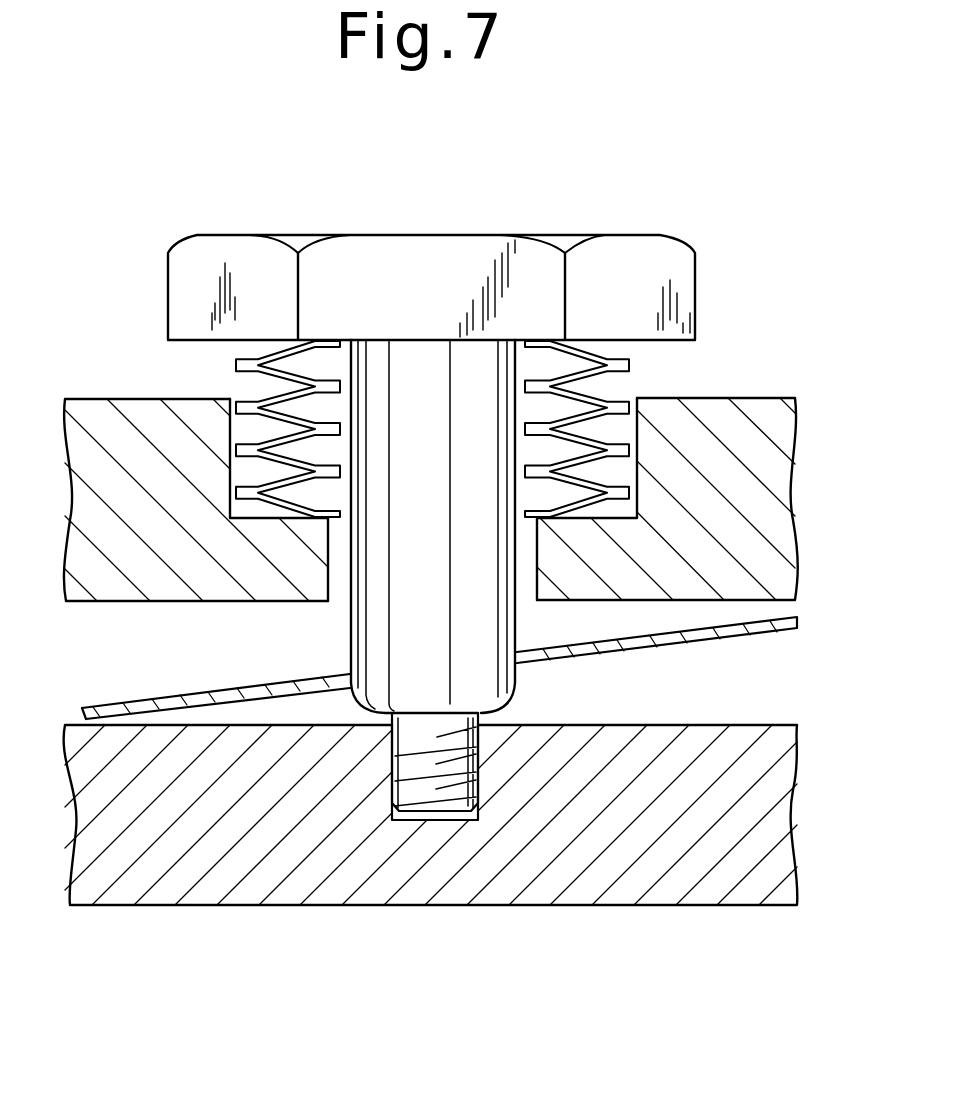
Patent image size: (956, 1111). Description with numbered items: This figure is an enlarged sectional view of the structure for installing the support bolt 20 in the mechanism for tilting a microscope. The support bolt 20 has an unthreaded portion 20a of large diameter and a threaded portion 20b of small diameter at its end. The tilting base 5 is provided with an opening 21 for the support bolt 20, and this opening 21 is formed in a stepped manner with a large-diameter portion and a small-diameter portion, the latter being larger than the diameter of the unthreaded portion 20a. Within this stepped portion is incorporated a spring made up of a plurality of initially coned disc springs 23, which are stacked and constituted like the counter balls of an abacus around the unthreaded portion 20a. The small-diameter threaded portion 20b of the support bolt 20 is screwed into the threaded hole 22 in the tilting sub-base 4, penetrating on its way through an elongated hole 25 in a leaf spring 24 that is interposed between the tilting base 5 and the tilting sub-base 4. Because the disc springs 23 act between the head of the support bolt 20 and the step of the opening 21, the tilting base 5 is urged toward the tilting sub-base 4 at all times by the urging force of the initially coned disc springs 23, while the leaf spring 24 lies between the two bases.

The tilting sub-base 4 is at (757, 803).
The tilting base 5 is at (768, 467).
The support bolt 20 is at (431, 574).
The unthreaded portion 20a is at (420, 432).
The threaded portion 20b is at (422, 790).
The opening 21 is at (342, 585).
The threaded hole 22 is at (480, 770).
The initially coned disc springs 23 is at (597, 440).
The leaf spring 24 is at (615, 650).
The elongated hole 25 is at (533, 660).